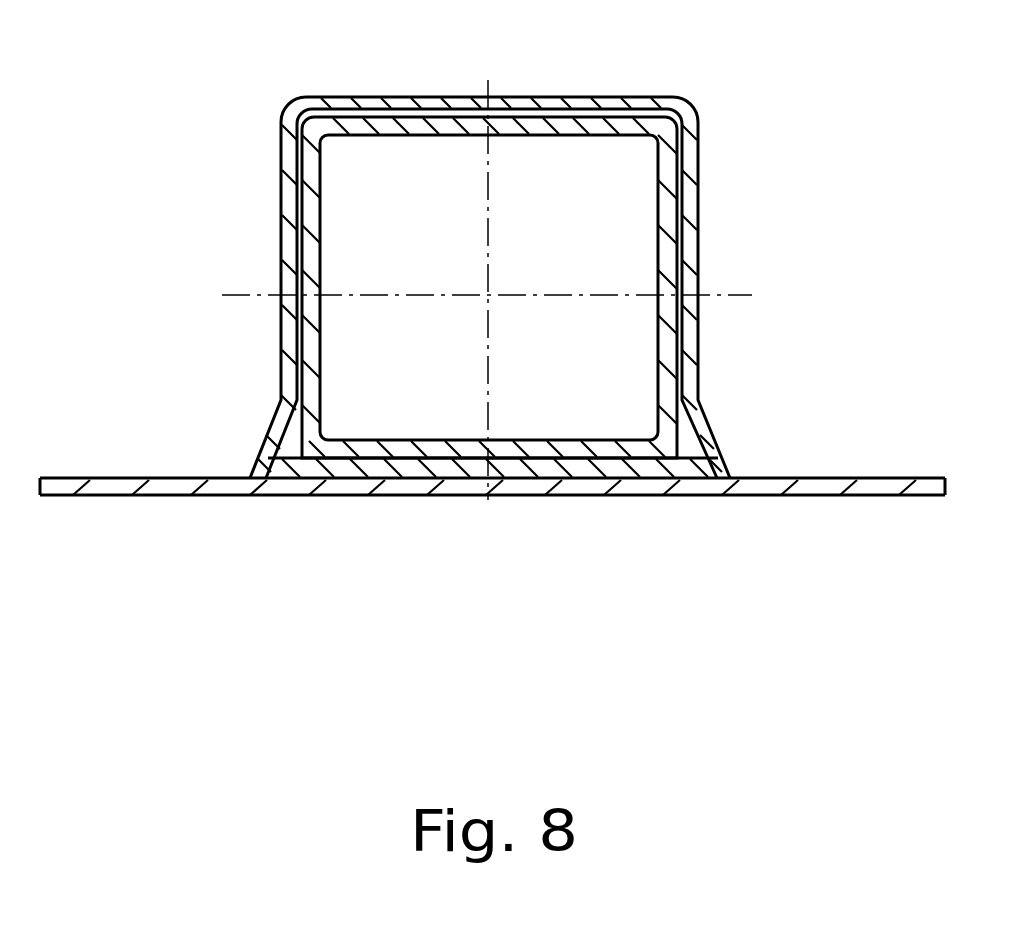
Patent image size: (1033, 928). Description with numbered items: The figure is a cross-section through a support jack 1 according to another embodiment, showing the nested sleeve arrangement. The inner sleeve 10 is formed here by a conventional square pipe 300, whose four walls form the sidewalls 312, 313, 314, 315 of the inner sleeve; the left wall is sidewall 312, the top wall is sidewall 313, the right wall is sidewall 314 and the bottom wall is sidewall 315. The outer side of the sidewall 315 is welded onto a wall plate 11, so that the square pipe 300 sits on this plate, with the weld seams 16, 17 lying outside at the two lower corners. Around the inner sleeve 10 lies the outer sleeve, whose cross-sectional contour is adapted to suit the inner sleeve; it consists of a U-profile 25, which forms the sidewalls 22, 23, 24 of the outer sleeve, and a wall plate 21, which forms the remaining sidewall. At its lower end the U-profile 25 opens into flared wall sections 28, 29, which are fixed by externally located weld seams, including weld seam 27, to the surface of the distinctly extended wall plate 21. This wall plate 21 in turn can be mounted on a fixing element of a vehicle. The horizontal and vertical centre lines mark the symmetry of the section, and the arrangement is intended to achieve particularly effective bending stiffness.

The fastening arrangement 1 is at (748, 102).
The inner sleeve 10 is at (646, 290).
The wall plate 11 is at (585, 465).
The weld seam 16 is at (278, 435).
The weld seam 17 is at (684, 452).
The wall plate 21 is at (104, 495).
The sidewall 22 is at (294, 194).
The shell 23 is at (461, 100).
The right side wall of shell 24 is at (692, 189).
The U-profile 25 is at (570, 100).
The weld seam 27 is at (735, 480).
The flared wall section 28 is at (280, 408).
The flared wall section 29 is at (715, 470).
The square pipe 300 is at (310, 235).
The sidewall 312 is at (318, 350).
The sidewall 313 is at (533, 123).
The sidewall 314 is at (667, 193).
The sidewall 315 is at (512, 440).